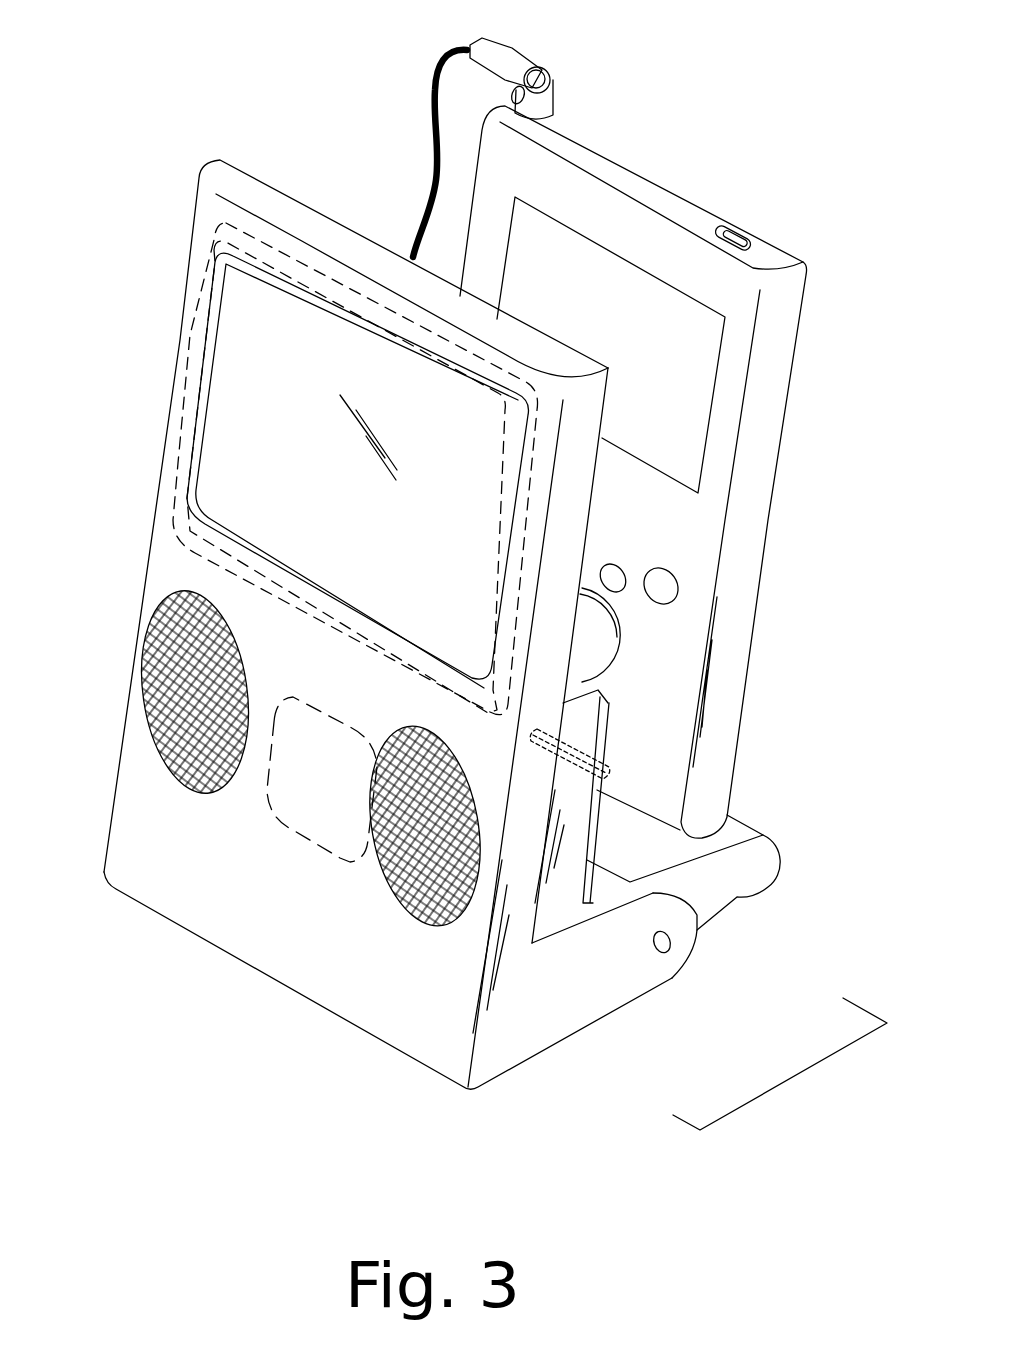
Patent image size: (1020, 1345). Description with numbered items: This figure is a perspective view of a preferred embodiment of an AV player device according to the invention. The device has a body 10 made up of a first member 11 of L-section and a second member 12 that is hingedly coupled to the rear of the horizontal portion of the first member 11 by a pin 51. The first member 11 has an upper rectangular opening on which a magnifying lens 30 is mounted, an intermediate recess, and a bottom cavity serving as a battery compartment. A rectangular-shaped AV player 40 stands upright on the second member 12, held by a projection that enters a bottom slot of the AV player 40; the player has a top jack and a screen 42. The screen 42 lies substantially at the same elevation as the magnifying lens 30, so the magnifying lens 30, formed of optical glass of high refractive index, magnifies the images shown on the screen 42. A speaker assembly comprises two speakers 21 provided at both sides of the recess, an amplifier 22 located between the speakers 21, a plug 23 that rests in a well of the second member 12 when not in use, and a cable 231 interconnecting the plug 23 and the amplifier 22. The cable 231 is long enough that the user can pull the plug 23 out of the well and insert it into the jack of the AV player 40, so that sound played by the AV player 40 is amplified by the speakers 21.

The body 10 is at (793, 1078).
The first member 11 is at (573, 1011).
The second member 12 is at (743, 895).
The speakers 21 is at (418, 878).
The amplifier 22 is at (310, 838).
The plug 23 is at (533, 72).
The cable 231 is at (432, 140).
The magnifying lens 30 is at (224, 408).
The AV player 40 is at (758, 437).
The screen 42 is at (565, 250).
The pin 51 is at (668, 942).